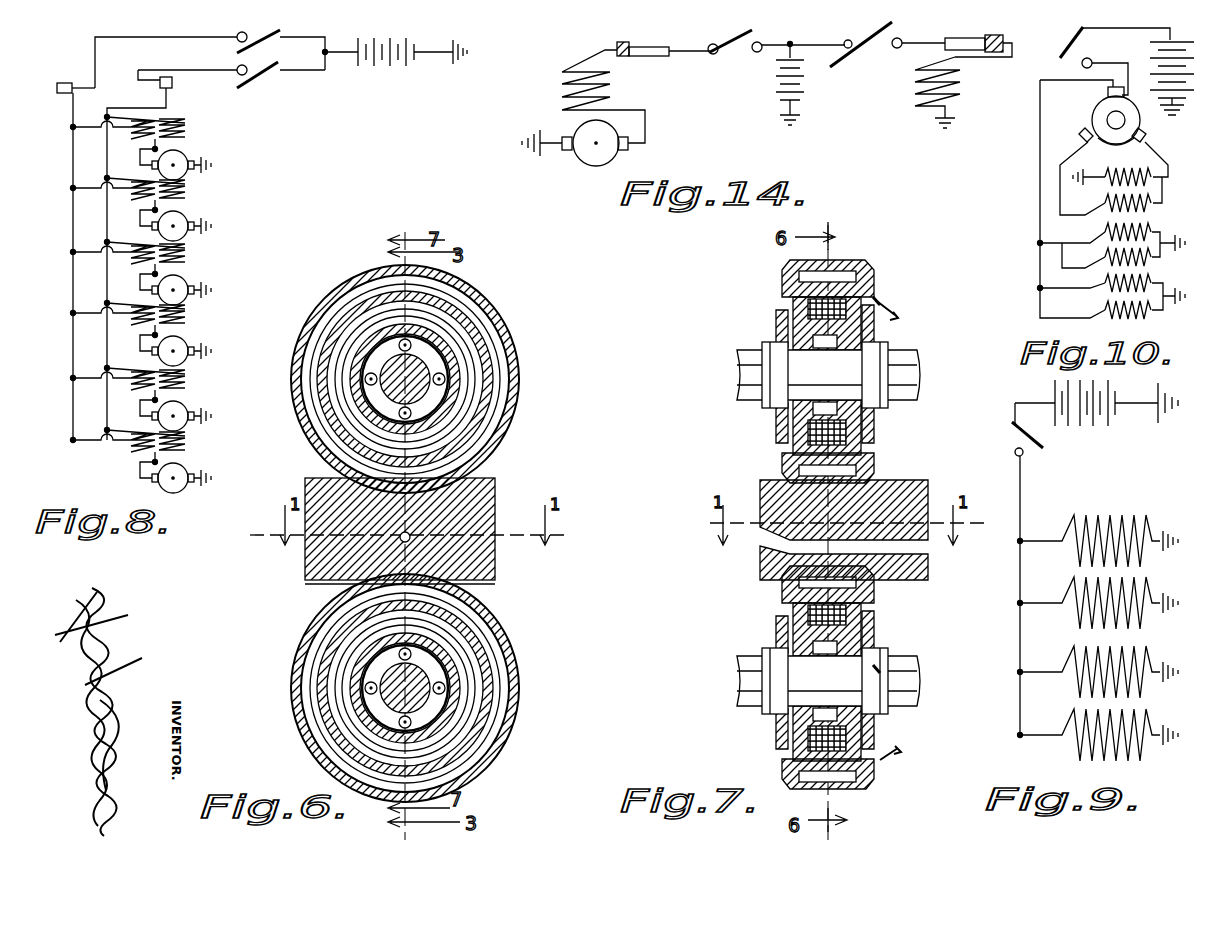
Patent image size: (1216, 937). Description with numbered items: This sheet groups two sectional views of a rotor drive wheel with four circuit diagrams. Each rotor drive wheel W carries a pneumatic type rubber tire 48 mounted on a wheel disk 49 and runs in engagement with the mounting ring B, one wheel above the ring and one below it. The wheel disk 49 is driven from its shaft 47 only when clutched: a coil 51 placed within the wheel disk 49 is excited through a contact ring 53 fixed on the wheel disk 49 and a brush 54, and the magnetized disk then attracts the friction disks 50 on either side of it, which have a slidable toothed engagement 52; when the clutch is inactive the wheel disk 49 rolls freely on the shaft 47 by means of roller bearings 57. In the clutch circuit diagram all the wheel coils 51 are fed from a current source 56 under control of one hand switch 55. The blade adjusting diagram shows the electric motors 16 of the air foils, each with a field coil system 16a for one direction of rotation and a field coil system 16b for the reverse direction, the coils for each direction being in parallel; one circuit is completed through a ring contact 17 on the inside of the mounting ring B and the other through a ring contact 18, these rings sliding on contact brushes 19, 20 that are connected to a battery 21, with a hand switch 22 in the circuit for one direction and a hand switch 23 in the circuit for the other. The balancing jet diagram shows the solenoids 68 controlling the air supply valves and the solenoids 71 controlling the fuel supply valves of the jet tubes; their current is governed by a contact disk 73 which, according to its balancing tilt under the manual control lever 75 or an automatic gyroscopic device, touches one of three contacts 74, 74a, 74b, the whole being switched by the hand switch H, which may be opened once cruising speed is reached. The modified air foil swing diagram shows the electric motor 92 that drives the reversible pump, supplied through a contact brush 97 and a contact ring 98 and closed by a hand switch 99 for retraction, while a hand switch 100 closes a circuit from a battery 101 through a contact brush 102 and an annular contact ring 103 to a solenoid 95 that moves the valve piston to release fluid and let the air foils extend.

In FIG. 8, the electric motor 16 is at (188, 160).
In FIG. 8, the field coil system 16a is at (130, 450).
In FIG. 8, the field coil system 16b is at (190, 127).
In FIG. 8, the ring contact 17 is at (62, 95).
In FIG. 8, the ring contact 18 is at (175, 80).
In FIG. 8, the contact brush 19 is at (80, 82).
In FIG. 8, the contact brush 20 is at (142, 82).
In FIG. 8, the battery 21 is at (398, 72).
In FIG. 8, the hand switch 22 is at (270, 38).
In FIG. 8, the hand switch 23 is at (278, 75).
In FIG. 6, the shaft 47 is at (440, 345).
In FIG. 6, the pneumatic type rubber tire 48 is at (505, 375).
In FIG. 7, the pneumatic type rubber tire 48 is at (858, 276).
In FIG. 6, the wheel disk 49 is at (350, 335).
In FIG. 7, the wheel disk 49 is at (795, 300).
In FIG. 7, the friction disk 50 is at (777, 434).
In FIG. 7, the coil 51 is at (852, 308).
In FIG. 9, the coil 51 is at (1068, 562).
In FIG. 7, the slidable toothed engagement 52 is at (766, 402).
In FIG. 7, the contact ring 53 is at (878, 300).
In FIG. 7, the brush 54 is at (900, 316).
In FIG. 9, the hand switch 55 is at (1045, 432).
In FIG. 9, the current source 56 is at (1118, 420).
In FIG. 7, the roller bearings 57 is at (818, 667).
In FIG. 6, the rotor drive wheel W is at (505, 435).
In FIG. 7, the rotor drive wheel W is at (782, 285).
In FIG. 6, the mounting ring B is at (330, 562).
In FIG. 7, the mounting ring B is at (760, 490).
In FIG. 10, the solenoid 68 is at (1105, 168).
In FIG. 10, the solenoid 71 is at (1100, 208).
In FIG. 10, the contact disk 73 is at (1105, 116).
In FIG. 10, the contact 74 is at (1107, 91).
In FIG. 10, the contact 74a is at (1118, 143).
In FIG. 10, the contact 74b is at (1147, 133).
In FIG. 10, the manual control lever 75 is at (1085, 130).
In FIG. 10, the hand switch H is at (1090, 52).
In FIG. 14, the electric motor 92 is at (615, 158).
In FIG. 14, the solenoid 95 is at (915, 100).
In FIG. 14, the contact brush 97 is at (660, 57).
In FIG. 14, the contact ring 98 is at (613, 44).
In FIG. 14, the hand switch 99 is at (730, 56).
In FIG. 14, the hand switch 100 is at (842, 56).
In FIG. 14, the battery 101 is at (810, 86).
In FIG. 14, the contact brush 102 is at (945, 50).
In FIG. 14, the annular contact ring 103 is at (985, 34).